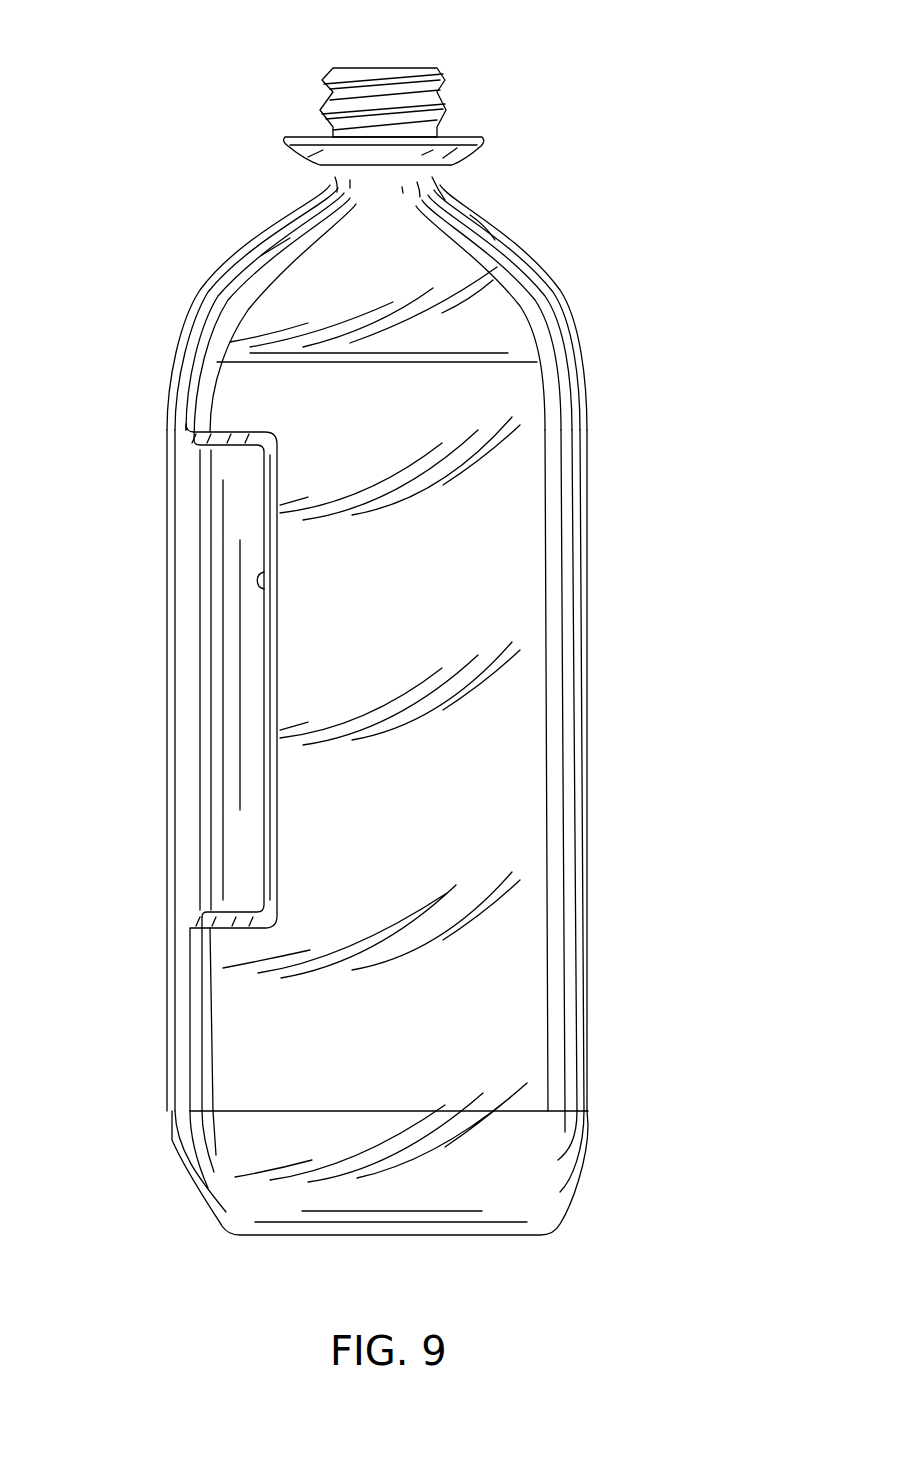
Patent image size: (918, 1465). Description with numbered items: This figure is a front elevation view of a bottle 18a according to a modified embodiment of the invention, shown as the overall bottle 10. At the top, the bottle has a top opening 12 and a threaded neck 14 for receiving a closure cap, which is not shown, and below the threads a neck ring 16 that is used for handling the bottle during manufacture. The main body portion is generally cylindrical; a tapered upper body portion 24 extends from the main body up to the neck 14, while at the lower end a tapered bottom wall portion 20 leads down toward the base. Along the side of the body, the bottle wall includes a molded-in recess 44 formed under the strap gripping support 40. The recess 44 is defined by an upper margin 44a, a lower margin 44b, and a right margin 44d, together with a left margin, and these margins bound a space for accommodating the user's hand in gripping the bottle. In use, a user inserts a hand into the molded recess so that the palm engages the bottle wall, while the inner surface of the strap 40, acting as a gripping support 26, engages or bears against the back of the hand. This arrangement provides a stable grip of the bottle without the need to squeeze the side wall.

The bottle 10 is at (690, 262).
The top opening 12 is at (433, 68).
The threaded neck 14 is at (445, 108).
The neck ring 16 is at (484, 140).
The bottle 18a is at (640, 468).
The tapered bottom wall portion 20 is at (587, 1163).
The tapered upper body portion 24 is at (562, 268).
The gripping support 26 is at (130, 577).
The strap gripping support 40 is at (170, 690).
The molded-in recess 44 is at (266, 588).
The upper margin 44a is at (248, 433).
The lower margin 44b is at (248, 922).
The right margin 44d is at (279, 672).